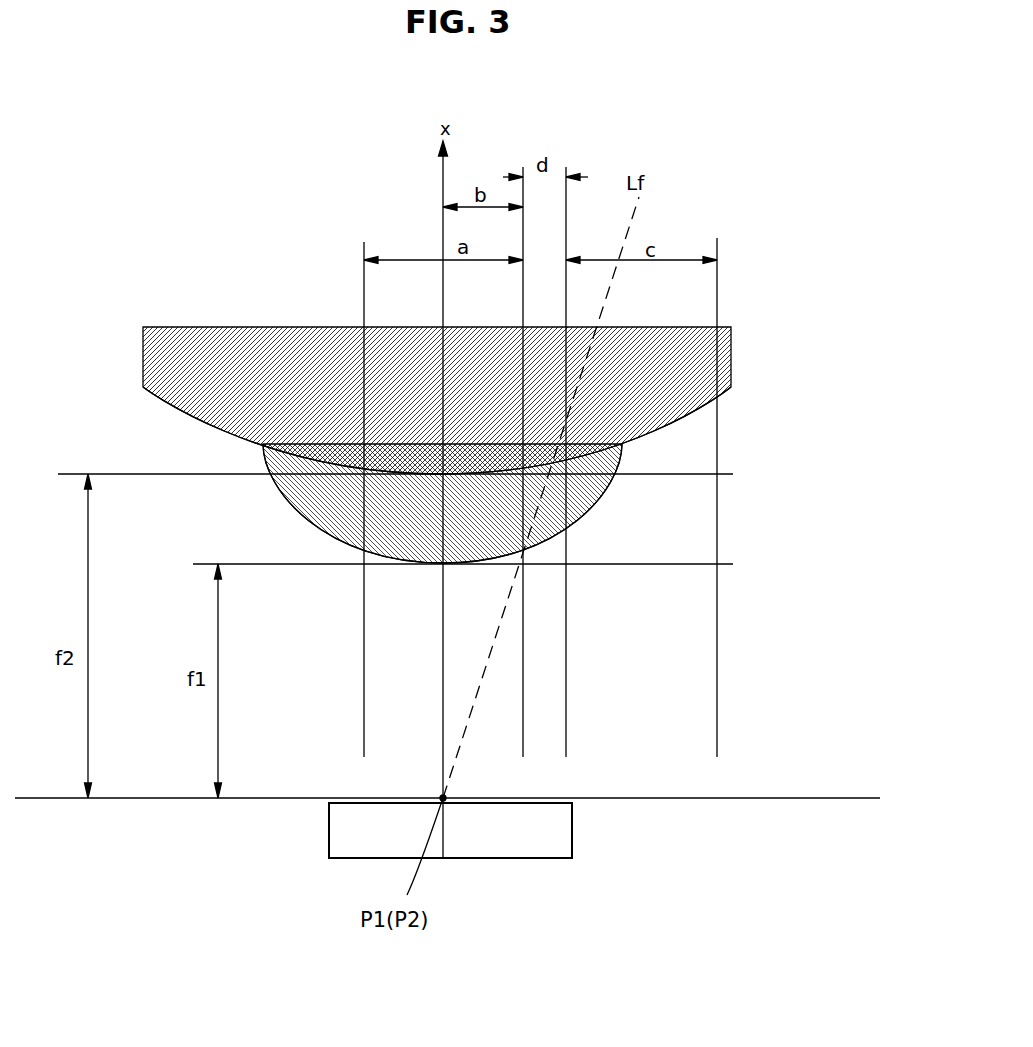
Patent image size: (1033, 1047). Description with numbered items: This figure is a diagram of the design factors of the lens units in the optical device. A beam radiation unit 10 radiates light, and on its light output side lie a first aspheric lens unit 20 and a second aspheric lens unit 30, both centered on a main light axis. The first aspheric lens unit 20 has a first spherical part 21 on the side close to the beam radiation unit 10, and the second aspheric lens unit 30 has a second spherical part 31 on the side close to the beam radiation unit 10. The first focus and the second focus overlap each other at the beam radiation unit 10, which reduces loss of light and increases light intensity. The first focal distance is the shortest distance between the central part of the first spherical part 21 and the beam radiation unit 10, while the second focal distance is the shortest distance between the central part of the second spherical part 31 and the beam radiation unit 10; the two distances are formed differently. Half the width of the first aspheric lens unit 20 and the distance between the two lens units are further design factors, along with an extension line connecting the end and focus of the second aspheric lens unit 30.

The beam radiation unit 10 is at (548, 837).
The first aspheric lens unit 20 is at (600, 494).
The first spherical part 21 is at (577, 523).
The second aspheric lens unit 30 is at (700, 357).
The second spherical part 31 is at (698, 397).